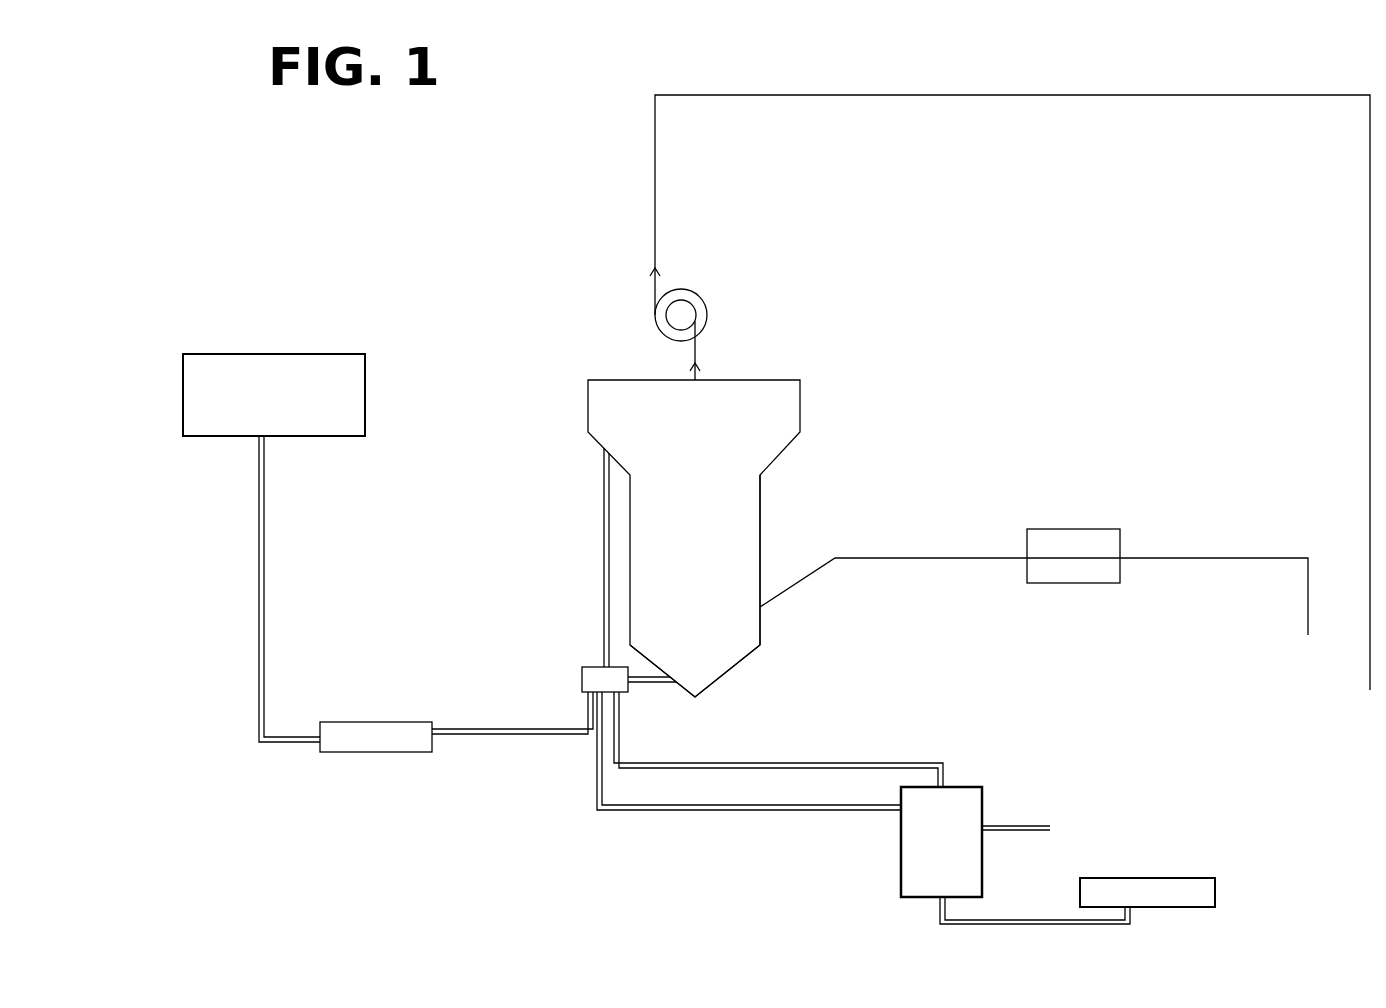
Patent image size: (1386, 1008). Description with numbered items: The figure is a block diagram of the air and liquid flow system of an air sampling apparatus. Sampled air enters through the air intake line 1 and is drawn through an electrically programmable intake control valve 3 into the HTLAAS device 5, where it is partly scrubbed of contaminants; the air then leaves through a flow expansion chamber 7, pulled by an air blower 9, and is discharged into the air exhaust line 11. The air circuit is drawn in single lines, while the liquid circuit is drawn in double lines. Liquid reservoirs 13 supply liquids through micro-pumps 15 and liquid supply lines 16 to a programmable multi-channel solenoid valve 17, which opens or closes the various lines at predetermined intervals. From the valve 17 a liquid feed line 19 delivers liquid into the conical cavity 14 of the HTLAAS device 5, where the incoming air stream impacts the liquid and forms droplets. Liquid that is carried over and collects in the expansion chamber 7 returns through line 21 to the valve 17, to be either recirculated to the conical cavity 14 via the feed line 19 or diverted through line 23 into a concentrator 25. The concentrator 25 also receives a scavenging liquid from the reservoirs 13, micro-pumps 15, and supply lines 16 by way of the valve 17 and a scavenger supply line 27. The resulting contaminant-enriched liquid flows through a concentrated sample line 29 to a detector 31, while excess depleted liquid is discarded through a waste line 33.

The air intake line 1 is at (1034, 537).
The intake control valve 3 is at (1092, 534).
The HTLAAS device 5 is at (827, 560).
The flow expansion chamber 7 is at (753, 538).
The air blower 9 is at (749, 327).
The air exhaust line 11 is at (1010, 392).
The liquid reservoirs 13 is at (277, 548).
The conical cavity 14 is at (798, 662).
The micro-pumps 15 is at (433, 703).
The liquid supply lines 16 is at (451, 741).
The multi-channel solenoid valve 17 is at (512, 594).
The liquid feed line 19 is at (689, 702).
The recirculation line 21 is at (529, 557).
The diversion line 23 is at (619, 761).
The concentrator 25 is at (868, 842).
The scavenger supply line 27 is at (803, 736).
The concentrated sample line 29 is at (910, 911).
The detector 31 is at (1221, 859).
The waste line 33 is at (1079, 759).